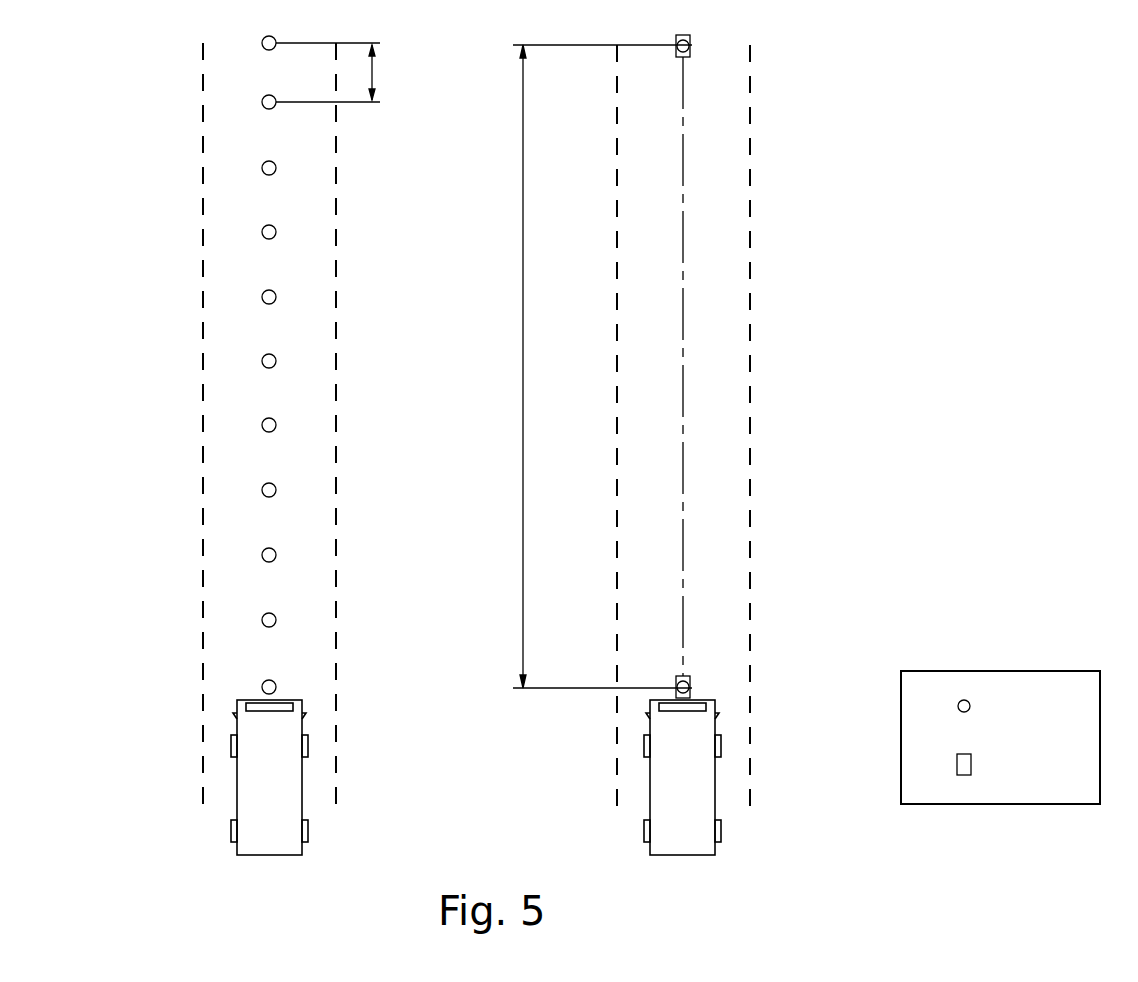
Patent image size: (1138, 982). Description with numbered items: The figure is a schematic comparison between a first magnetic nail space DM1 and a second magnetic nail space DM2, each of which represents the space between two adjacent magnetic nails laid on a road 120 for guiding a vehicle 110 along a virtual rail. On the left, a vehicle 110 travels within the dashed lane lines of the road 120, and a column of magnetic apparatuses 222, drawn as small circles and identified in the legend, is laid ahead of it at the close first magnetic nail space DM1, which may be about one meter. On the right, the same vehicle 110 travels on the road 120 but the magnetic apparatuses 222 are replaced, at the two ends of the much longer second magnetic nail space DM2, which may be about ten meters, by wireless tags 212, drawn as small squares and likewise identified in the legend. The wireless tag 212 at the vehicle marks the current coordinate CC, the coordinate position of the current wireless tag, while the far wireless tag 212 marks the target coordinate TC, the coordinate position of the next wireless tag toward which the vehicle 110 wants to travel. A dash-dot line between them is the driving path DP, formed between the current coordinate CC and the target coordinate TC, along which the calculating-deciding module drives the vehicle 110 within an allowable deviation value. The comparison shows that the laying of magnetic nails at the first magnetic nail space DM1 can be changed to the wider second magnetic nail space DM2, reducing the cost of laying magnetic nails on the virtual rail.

The vehicle 110 is at (242, 770).
The road 120 is at (203, 327).
The wireless tag 212 is at (869, 409).
The magnetic apparatus 222 is at (662, 379).
The target coordinate TC is at (692, 50).
The current coordinate CC is at (692, 692).
The driving path DP is at (683, 237).
The first magnetic nail space DM1 is at (361, 72).
The second magnetic nail space DM2 is at (602, 366).